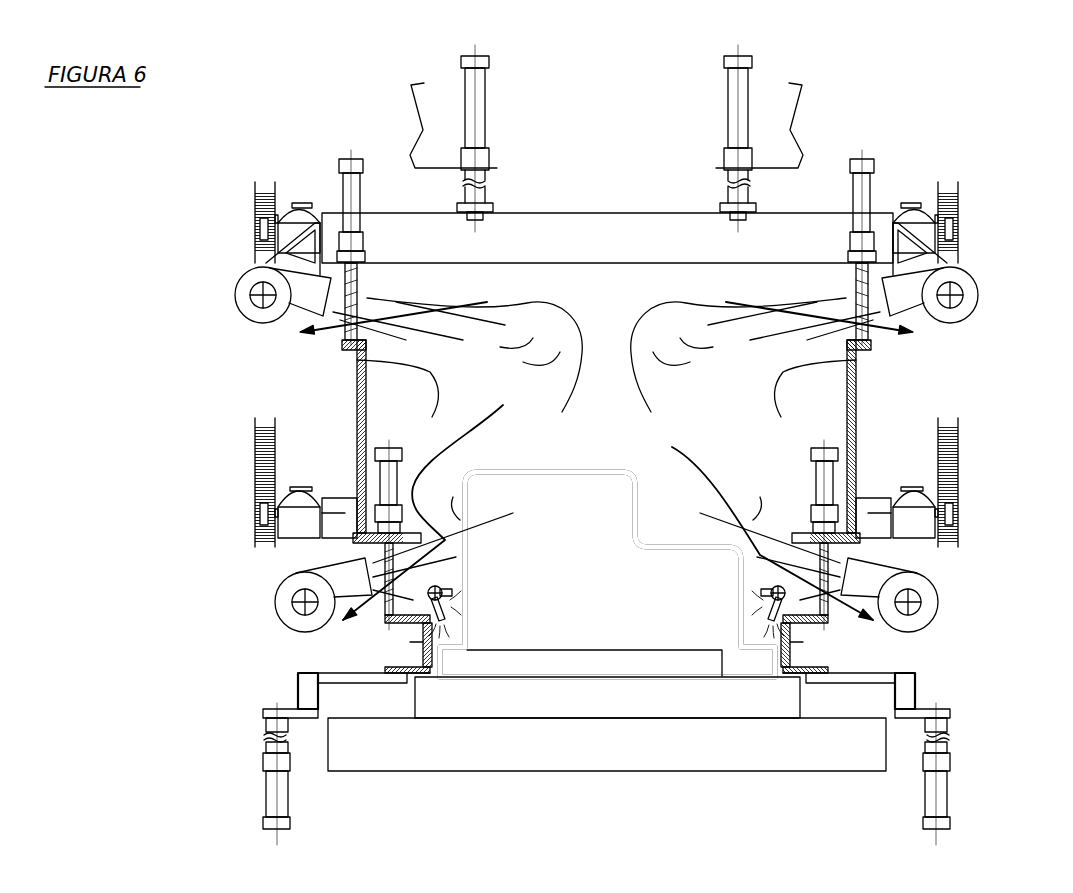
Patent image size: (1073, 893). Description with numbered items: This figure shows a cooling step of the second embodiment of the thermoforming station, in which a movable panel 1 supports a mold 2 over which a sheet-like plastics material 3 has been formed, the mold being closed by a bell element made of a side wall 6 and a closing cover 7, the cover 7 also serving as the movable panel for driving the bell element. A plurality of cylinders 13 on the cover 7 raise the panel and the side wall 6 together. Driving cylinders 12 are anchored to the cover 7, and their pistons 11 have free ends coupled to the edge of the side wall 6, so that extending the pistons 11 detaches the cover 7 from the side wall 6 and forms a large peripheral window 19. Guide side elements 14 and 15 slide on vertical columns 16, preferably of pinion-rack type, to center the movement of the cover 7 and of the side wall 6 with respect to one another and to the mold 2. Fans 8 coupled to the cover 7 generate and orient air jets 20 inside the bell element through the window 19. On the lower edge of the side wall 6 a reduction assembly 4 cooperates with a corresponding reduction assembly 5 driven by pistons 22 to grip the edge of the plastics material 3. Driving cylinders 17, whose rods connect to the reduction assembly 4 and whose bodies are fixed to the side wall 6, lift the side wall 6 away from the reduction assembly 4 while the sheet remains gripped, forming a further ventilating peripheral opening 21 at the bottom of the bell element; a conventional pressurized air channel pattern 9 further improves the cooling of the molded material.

The movable panel 1 is at (457, 772).
The mold 2 is at (508, 515).
The sheet-like plastics material 3 is at (580, 470).
The reduction assembly 4 is at (420, 630).
The reduction assembly 5 is at (425, 652).
The side wall 6 is at (355, 420).
The closing cover 7 is at (530, 212).
The fans 8 is at (238, 278).
The pressurized air channel pattern 9 is at (445, 607).
The piston 11 is at (948, 340).
The driving cylinders 12 is at (337, 162).
The cylinders 13 is at (750, 117).
The guide side element 14 is at (258, 222).
The guide side element 15 is at (258, 505).
The vertical columns 16 is at (255, 433).
The driving cylinders 17 is at (377, 497).
The peripheral window 19 is at (368, 300).
The air jets 20 is at (355, 351).
The ventilating peripheral opening 21 is at (377, 553).
The pistons 22 is at (265, 793).